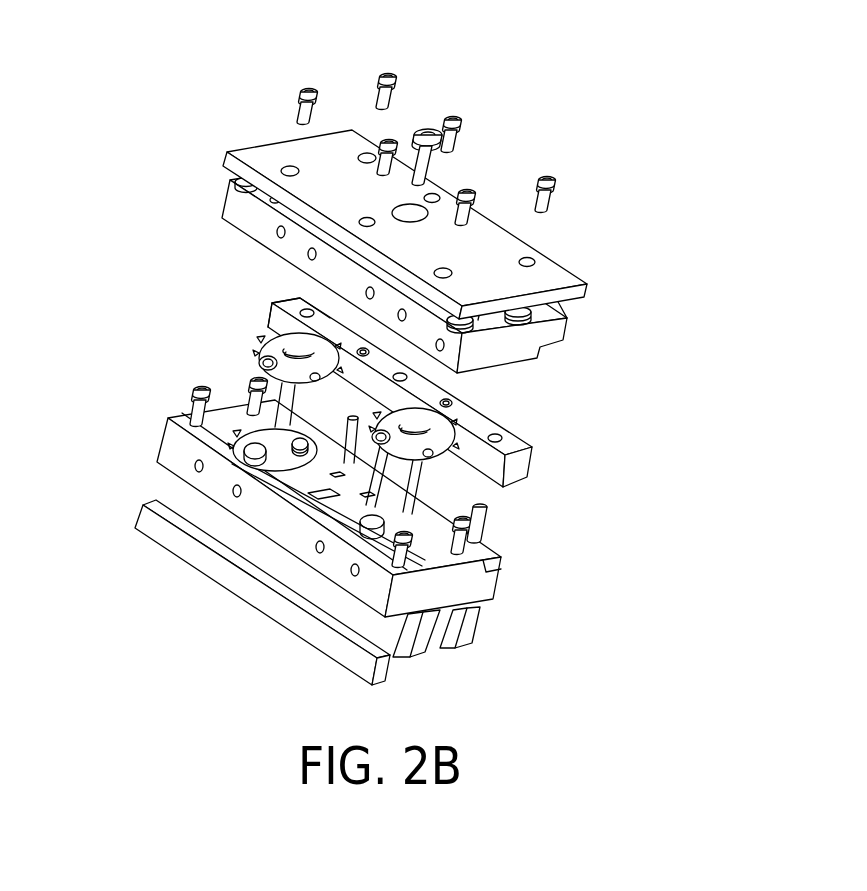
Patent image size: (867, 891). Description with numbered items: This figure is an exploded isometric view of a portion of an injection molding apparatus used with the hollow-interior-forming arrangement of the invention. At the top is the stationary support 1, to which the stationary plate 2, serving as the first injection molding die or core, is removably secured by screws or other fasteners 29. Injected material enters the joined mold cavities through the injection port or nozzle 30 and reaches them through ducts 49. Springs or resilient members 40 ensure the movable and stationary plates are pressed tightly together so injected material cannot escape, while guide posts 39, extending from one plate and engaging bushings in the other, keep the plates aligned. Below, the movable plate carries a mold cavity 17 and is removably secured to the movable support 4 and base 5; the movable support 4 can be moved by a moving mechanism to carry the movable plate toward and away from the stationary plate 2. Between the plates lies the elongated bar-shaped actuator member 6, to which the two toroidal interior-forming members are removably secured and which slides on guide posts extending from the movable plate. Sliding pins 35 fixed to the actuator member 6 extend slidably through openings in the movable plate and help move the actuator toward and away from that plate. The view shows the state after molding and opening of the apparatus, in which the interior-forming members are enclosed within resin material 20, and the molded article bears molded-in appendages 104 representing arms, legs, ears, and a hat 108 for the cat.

The stationary support 1 is at (550, 258).
The stationary plate 2 is at (510, 360).
The movable support 4 is at (402, 640).
The base 5 is at (270, 598).
The actuator member 6 is at (515, 471).
The mold cavity 17 is at (243, 410).
The resin material 20 is at (290, 330).
The fasteners 29 is at (470, 188).
The injection port 30 is at (430, 128).
The sliding pins 35 is at (364, 348).
The guide posts 39 is at (407, 560).
The springs 40 is at (483, 340).
The ducts 49 is at (247, 518).
The molded-in appendages 104 is at (503, 487).
The hat 108 is at (258, 365).